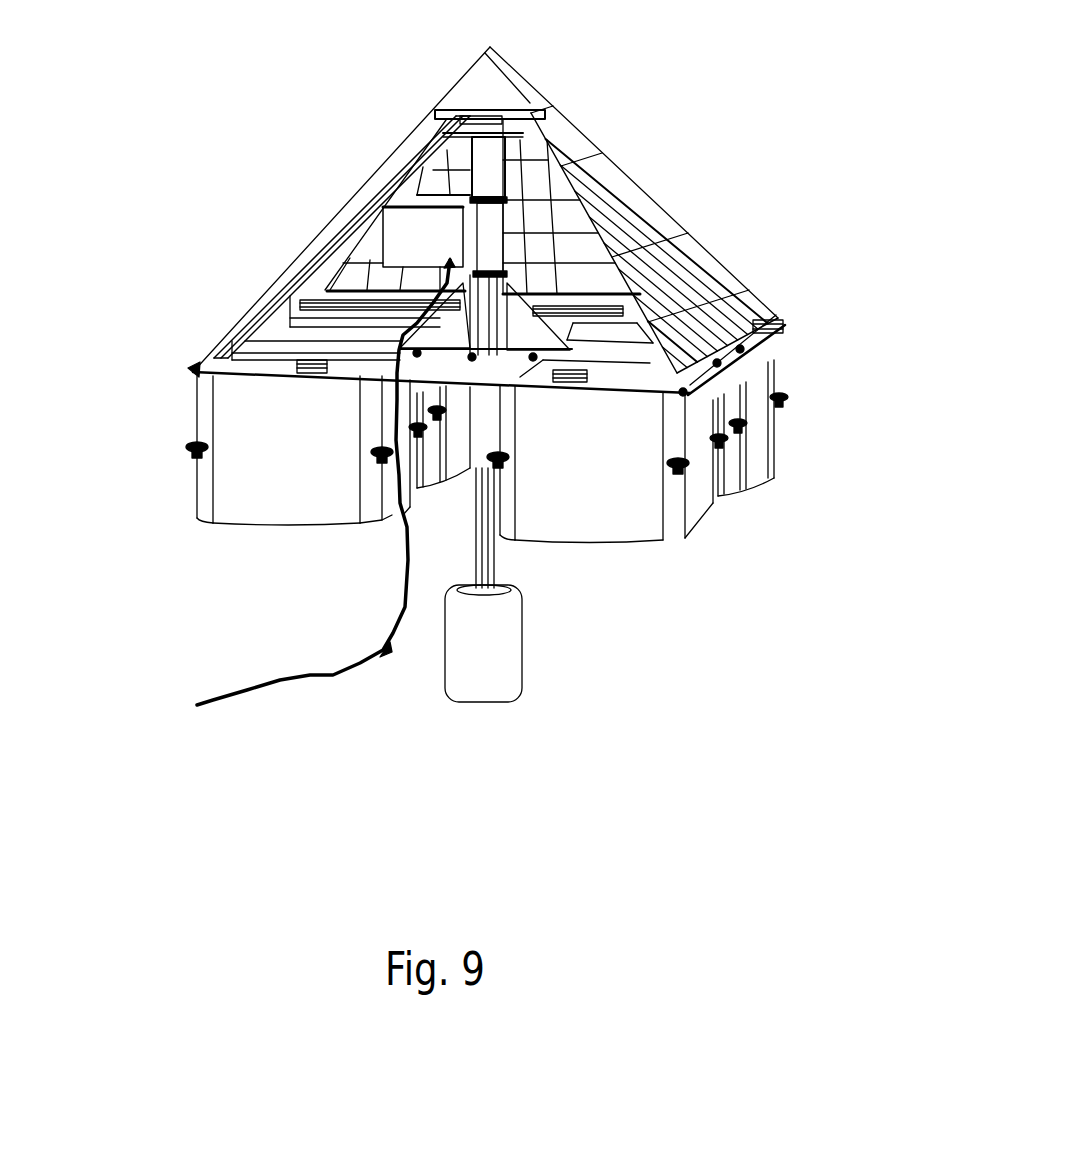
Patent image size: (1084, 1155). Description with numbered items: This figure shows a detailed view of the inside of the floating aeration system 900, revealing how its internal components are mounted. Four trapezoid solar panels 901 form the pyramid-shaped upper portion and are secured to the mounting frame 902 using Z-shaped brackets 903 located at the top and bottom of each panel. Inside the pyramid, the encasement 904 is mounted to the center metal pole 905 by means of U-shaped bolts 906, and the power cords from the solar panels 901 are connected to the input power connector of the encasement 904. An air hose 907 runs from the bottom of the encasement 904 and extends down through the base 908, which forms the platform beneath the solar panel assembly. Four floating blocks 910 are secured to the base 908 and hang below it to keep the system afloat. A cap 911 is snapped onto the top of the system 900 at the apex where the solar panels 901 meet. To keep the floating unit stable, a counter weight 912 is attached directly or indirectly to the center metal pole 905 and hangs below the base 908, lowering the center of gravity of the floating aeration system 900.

The floating aeration system 900 is at (343, 78).
The trapezoid solar panels 901 is at (630, 187).
The mounting frame 902 is at (784, 323).
The Z-shaped brackets 903 is at (763, 317).
The encasement 904 is at (405, 226).
The center metal pole 905 is at (480, 163).
The U-shaped bolts 906 is at (517, 160).
The air hose 907 is at (260, 677).
The base 908 is at (350, 345).
The floating blocks 910 is at (757, 438).
The cap 911 is at (516, 86).
The counter weight 912 is at (507, 650).